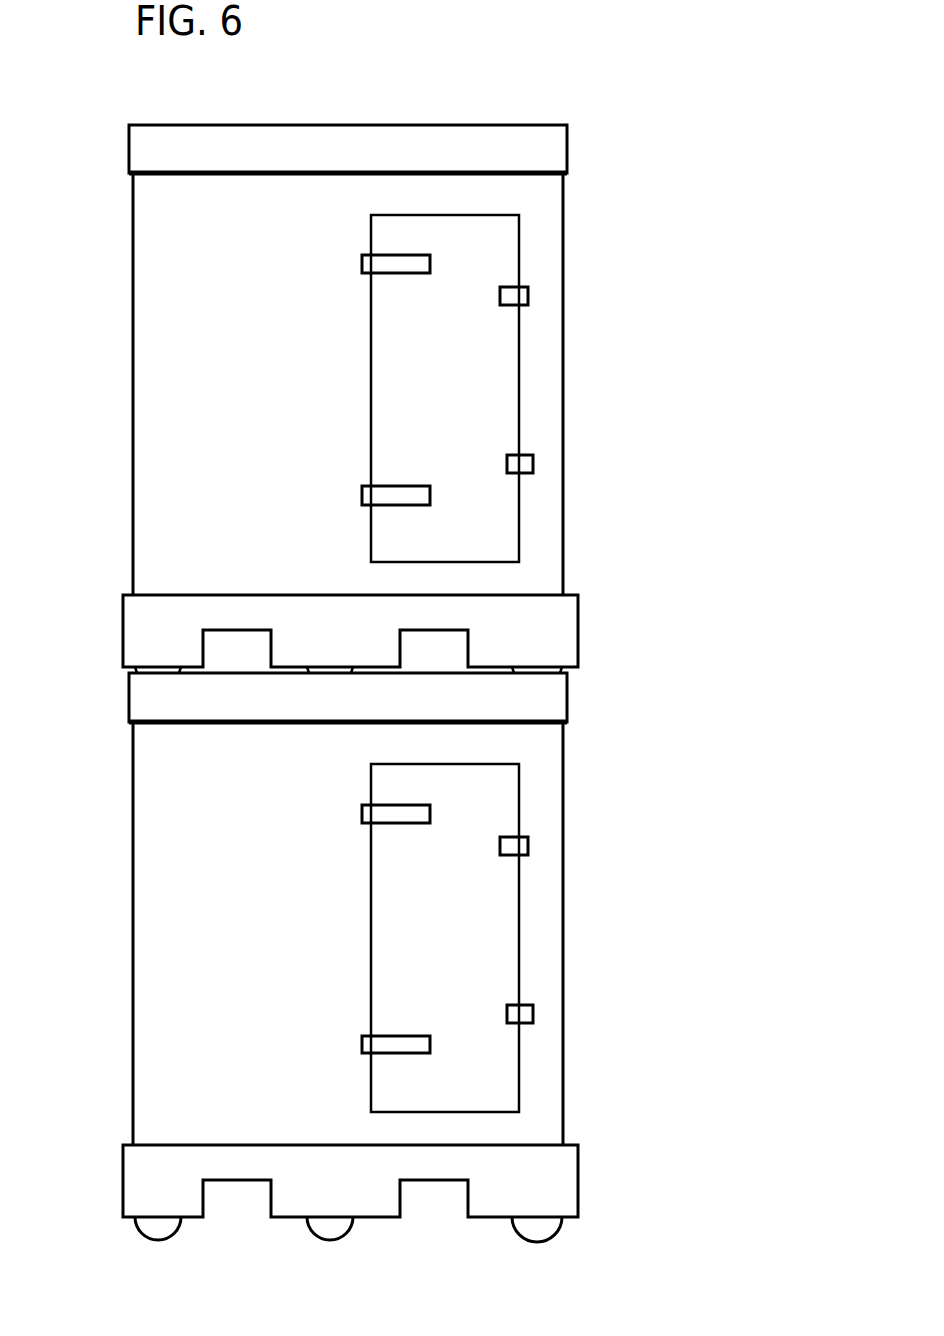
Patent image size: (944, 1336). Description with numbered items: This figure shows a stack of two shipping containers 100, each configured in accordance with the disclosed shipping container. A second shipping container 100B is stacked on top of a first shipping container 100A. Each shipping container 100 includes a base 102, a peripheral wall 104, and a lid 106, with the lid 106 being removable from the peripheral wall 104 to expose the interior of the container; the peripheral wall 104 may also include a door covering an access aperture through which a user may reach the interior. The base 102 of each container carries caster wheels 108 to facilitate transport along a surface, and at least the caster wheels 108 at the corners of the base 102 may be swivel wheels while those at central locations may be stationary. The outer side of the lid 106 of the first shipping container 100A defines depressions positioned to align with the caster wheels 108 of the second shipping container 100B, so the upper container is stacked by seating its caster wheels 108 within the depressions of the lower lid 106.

The shipping container 100 is at (398, 699).
The first shipping container 100A is at (607, 862).
The second shipping container 100B is at (640, 261).
The base 102 is at (123, 620).
The peripheral wall 104 is at (133, 357).
The lid 106 is at (129, 146).
The caster wheels 108 is at (158, 668).